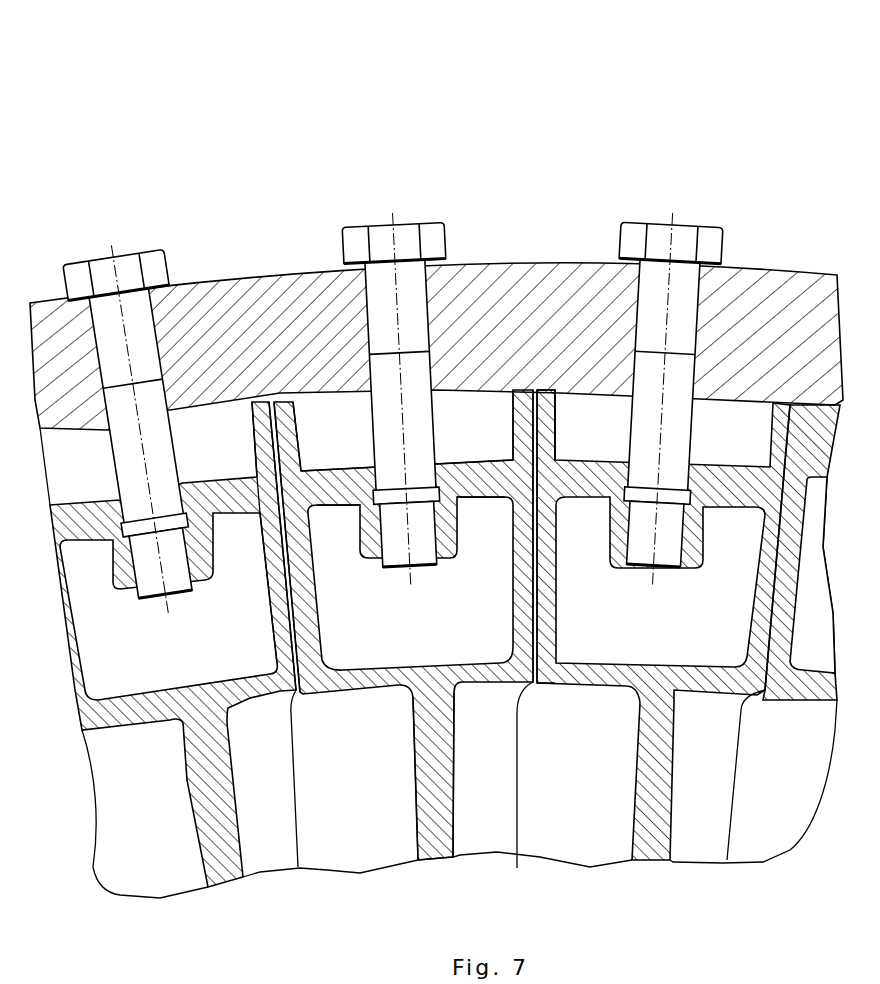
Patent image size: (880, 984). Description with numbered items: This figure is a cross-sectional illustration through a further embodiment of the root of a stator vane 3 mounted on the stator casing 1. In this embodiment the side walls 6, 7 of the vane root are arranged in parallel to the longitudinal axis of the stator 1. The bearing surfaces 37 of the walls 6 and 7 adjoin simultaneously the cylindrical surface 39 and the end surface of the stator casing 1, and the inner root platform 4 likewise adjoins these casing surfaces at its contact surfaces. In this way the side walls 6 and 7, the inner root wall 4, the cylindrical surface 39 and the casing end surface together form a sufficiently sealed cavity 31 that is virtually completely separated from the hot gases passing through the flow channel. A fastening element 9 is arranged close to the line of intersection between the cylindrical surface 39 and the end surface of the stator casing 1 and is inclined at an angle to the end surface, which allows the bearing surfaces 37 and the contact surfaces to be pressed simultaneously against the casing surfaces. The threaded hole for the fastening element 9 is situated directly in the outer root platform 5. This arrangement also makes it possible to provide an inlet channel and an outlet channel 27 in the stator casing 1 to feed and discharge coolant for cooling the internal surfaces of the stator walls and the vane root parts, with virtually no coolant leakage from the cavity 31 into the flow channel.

The stator casing 1 is at (778, 317).
The vane 3 is at (437, 793).
The inner root platform 4 is at (168, 285).
The outer root platform 5 is at (338, 423).
The wall 6 is at (273, 497).
The wall 7 is at (518, 555).
The fastening element 9 is at (383, 243).
The outlet channel 27 is at (446, 526).
The cavity 31 is at (340, 487).
The bearing surface 37 is at (280, 382).
The cylindrical surface 39 is at (499, 382).